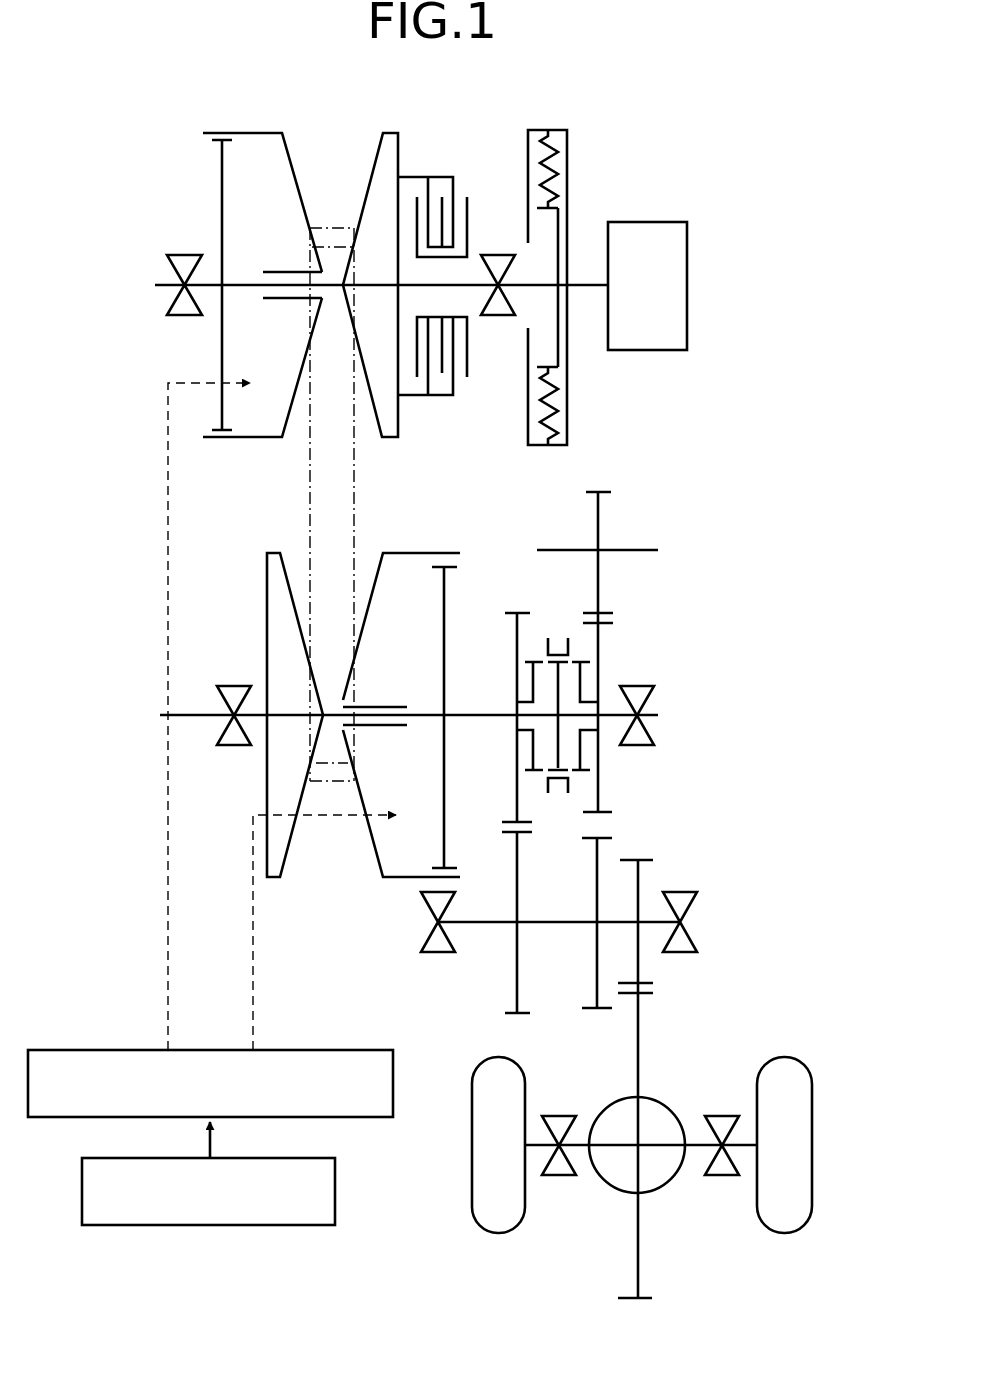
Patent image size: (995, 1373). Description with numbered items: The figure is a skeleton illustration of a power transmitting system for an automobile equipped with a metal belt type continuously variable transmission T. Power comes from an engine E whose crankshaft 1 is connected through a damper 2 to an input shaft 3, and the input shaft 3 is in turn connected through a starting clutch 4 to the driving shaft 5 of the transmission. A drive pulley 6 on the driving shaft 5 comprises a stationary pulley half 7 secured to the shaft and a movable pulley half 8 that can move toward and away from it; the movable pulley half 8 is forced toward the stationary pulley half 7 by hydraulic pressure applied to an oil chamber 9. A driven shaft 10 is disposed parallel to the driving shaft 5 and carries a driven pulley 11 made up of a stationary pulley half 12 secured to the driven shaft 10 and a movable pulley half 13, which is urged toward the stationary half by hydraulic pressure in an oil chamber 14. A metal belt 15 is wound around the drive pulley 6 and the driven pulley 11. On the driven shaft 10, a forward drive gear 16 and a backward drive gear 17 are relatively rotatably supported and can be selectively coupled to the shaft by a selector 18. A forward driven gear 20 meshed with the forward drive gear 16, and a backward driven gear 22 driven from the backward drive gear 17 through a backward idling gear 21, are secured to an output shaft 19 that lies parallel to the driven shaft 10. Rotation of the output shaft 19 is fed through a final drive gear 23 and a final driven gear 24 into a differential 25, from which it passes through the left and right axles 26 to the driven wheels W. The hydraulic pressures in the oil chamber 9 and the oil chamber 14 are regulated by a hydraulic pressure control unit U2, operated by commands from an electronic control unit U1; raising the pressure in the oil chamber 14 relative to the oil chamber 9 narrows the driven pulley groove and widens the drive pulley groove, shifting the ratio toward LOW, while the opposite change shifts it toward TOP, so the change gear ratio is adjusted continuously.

The crankshaft 1 is at (584, 300).
The damper 2 is at (578, 172).
The input shaft 3 is at (521, 283).
The starting clutch 4 is at (443, 171).
The driving shaft 5 is at (238, 283).
The drive pulley 6 is at (323, 184).
The stationary pulley half 7 is at (380, 165).
The movable pulley half 8 is at (288, 167).
The oil chamber 9 is at (256, 358).
The driven shaft 10 is at (497, 715).
The driven pulley 11 is at (344, 864).
The stationary pulley half 12 is at (268, 590).
The movable pulley half 13 is at (378, 585).
The oil chamber 14 is at (406, 802).
The metal belt 15 is at (357, 506).
The forward drive gear 16 is at (508, 611).
The backward drive gear 17 is at (610, 627).
The selector 18 is at (559, 794).
The output shaft 19 is at (540, 921).
The forward driven gear 20 is at (520, 1016).
The backward idling gear 21 is at (608, 491).
The backward driven gear 22 is at (591, 1011).
The final drive gear 23 is at (641, 857).
The final driven gear 24 is at (652, 991).
The differential 25 is at (666, 1100).
The axle 26 is at (576, 1150).
The driven wheel W is at (471, 1198).
The engine E is at (637, 300).
The metal belt type continuously variable transmission T is at (256, 490).
The electronic control unit U1 is at (335, 1171).
The hydraulic pressure control unit U2 is at (395, 1061).